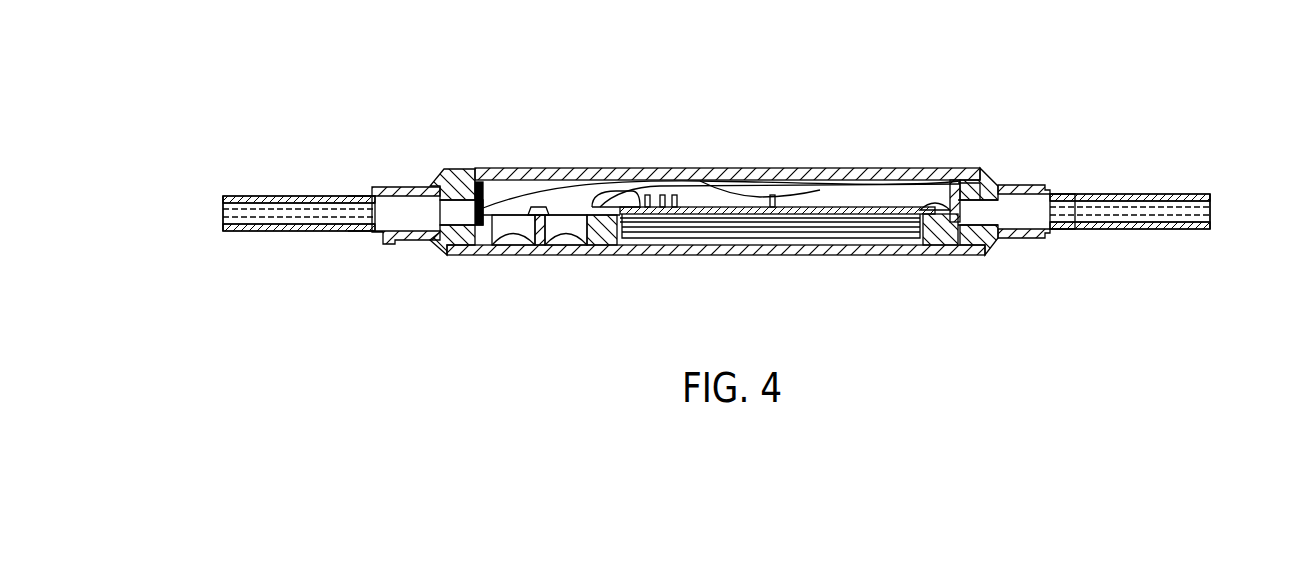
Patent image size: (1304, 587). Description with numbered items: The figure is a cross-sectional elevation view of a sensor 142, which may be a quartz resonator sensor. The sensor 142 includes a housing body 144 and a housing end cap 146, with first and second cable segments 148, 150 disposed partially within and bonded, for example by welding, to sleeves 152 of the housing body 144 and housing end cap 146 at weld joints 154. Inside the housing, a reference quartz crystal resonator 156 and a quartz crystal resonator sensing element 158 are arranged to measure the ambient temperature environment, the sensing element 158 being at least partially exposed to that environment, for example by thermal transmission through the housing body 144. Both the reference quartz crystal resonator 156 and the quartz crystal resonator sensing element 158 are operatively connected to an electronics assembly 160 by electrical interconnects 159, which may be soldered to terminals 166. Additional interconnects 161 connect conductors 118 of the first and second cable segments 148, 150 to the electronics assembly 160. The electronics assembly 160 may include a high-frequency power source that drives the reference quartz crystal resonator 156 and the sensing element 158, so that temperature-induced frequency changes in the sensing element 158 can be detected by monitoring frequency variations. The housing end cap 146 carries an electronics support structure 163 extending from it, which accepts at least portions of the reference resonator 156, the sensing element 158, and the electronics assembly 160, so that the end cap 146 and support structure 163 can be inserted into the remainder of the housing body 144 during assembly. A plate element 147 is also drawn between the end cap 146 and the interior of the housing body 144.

The conductors 118 is at (285, 197).
The sensor 142 is at (963, 121).
The housing body 144 is at (572, 174).
The housing end cap 146 is at (450, 183).
The plate 147 is at (473, 173).
The first cable segment 148 is at (208, 240).
The second cable segment 150 is at (1235, 239).
The sleeves 152 is at (395, 241).
The weld joints 154 is at (374, 189).
The reference quartz crystal resonator 156 is at (505, 222).
The quartz crystal resonator sensing element 158 is at (558, 222).
The electrical interconnects 159 is at (638, 212).
The electronics assembly 160 is at (767, 241).
The additional interconnects 161 is at (800, 198).
The electronics support structure 163 is at (598, 220).
The terminals 166 is at (715, 216).